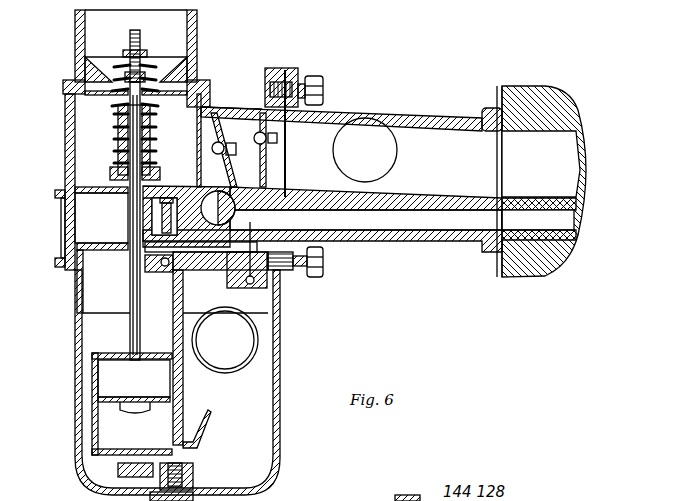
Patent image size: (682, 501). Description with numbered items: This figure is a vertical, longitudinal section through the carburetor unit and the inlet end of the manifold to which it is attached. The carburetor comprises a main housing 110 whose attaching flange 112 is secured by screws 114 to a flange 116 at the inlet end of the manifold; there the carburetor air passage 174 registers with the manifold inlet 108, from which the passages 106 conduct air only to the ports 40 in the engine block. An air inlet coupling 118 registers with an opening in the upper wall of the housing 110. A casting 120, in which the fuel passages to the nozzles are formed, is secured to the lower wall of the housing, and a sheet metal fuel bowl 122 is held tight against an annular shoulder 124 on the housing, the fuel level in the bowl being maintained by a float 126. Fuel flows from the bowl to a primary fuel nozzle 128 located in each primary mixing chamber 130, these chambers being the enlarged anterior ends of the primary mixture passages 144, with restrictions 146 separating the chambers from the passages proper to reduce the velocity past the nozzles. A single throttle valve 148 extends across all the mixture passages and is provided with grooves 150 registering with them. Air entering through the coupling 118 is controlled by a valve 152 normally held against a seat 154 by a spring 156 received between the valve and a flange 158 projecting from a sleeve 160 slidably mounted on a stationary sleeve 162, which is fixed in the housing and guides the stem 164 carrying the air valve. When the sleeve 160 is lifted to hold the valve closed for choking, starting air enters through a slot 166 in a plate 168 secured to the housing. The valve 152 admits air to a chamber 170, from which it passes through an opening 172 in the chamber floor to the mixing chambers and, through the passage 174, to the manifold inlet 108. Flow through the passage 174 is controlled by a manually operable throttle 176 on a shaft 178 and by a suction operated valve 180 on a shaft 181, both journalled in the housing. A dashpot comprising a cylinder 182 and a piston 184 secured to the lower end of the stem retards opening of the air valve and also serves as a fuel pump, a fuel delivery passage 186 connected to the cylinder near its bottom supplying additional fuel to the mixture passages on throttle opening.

The port 40 is at (520, 130).
The passage 106 is at (448, 130).
The inlet 108 is at (325, 125).
The main housing 110 is at (250, 117).
The attaching flange 112 is at (275, 73).
The screws 114 is at (320, 85).
The flange 116 is at (300, 73).
The air inlet coupling 118 is at (197, 28).
The casting 120 is at (182, 297).
The fuel bowl 122 is at (280, 348).
The annular shoulder 124 is at (282, 297).
The float 126 is at (227, 377).
The primary fuel nozzle 128 is at (180, 190).
The primary mixing chamber 130 is at (288, 220).
The primary mixture passage 144 is at (163, 190).
The restriction 146 is at (190, 197).
The throttle valve 148 is at (235, 198).
The grooves 150 is at (232, 220).
The air valve 152 is at (167, 52).
The seat 154 is at (182, 90).
The spring 156 is at (115, 105).
The flange 158 is at (112, 172).
The sleeve 160 is at (118, 137).
The stationary sleeve 162 is at (118, 120).
The stem 164 is at (133, 332).
The slot 166 is at (60, 247).
The plate 168 is at (62, 212).
The chamber 170 is at (75, 147).
The opening 172 is at (98, 193).
The passage 174 is at (223, 123).
The manually operable throttle 176 is at (224, 132).
The shaft 178 is at (228, 153).
The suction operated valve 180 is at (262, 155).
The shaft 181 is at (272, 133).
The cylinder 182 is at (100, 398).
The piston 184 is at (100, 373).
The fuel delivery passage 186 is at (208, 427).